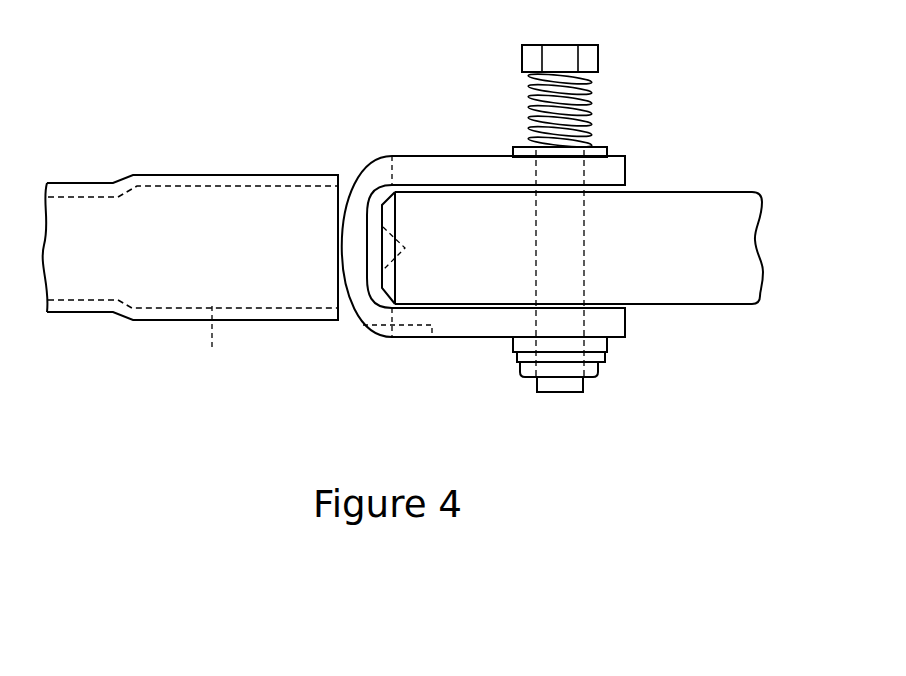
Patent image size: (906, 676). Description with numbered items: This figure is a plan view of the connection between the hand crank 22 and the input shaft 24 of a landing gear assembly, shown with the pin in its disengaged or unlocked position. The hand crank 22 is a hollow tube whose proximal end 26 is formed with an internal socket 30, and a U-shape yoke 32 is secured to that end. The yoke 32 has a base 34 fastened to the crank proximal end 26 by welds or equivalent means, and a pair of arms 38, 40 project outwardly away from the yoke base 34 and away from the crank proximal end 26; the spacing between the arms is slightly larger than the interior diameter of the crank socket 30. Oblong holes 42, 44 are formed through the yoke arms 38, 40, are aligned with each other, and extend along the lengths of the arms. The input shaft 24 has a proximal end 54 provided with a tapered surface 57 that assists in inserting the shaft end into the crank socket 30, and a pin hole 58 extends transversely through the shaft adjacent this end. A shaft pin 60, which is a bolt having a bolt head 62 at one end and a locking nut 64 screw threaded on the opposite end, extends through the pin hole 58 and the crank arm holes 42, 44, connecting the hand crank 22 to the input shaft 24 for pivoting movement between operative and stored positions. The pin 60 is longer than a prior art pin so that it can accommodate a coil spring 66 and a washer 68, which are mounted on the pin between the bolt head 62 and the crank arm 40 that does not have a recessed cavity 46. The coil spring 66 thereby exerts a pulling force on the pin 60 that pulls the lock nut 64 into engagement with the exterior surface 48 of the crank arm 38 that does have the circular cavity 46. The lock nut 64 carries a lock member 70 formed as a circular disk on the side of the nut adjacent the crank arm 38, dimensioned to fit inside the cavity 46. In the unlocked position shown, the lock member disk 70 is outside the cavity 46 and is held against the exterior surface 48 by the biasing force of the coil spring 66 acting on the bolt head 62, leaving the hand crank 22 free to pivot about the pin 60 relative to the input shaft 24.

The hand crank 22 is at (120, 313).
The input shaft 24 is at (728, 203).
The crank proximal end 26 is at (228, 175).
The crank socket 30 is at (214, 346).
The U-shape yoke 32 is at (400, 340).
The yoke base 34 is at (355, 222).
The yoke arm 38 is at (458, 327).
The yoke arm 40 is at (418, 155).
The oblong hole 42 is at (490, 341).
The oblong hole 44 is at (405, 153).
The circular cavity 46 is at (366, 337).
The exterior surface 48 is at (627, 343).
The shaft proximal end 54 is at (460, 210).
The tapered surface 57 is at (383, 297).
The pin hole 58 is at (578, 237).
The shaft pin 60 is at (560, 393).
The bolt head 62 is at (560, 53).
The locking nut 64 is at (590, 370).
The coil spring 66 is at (532, 93).
The washer 68 is at (520, 147).
The lock member 70 is at (600, 343).